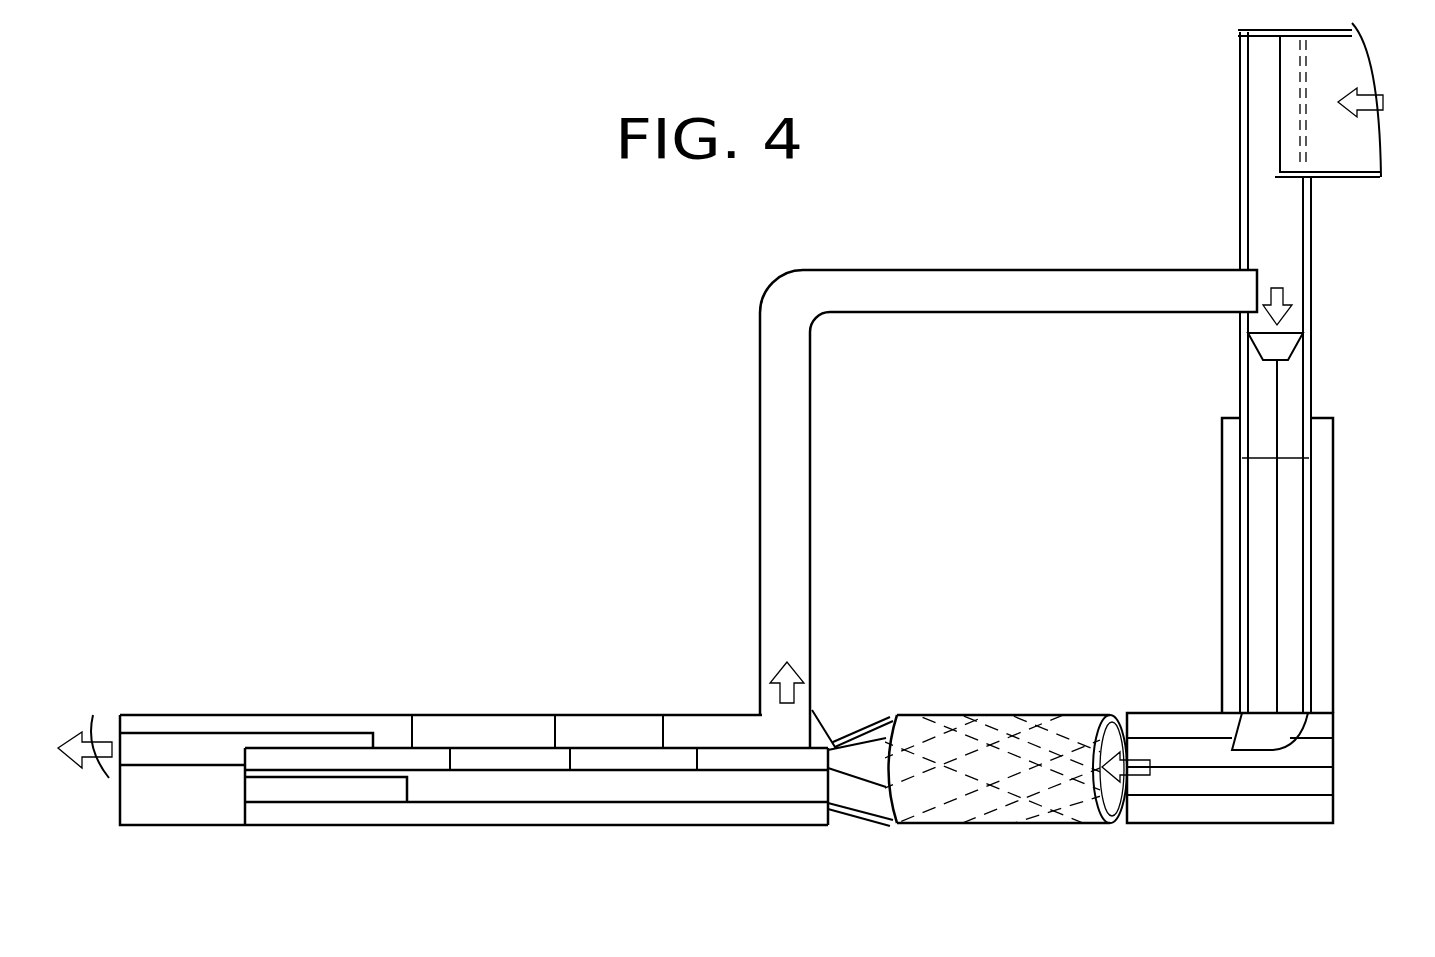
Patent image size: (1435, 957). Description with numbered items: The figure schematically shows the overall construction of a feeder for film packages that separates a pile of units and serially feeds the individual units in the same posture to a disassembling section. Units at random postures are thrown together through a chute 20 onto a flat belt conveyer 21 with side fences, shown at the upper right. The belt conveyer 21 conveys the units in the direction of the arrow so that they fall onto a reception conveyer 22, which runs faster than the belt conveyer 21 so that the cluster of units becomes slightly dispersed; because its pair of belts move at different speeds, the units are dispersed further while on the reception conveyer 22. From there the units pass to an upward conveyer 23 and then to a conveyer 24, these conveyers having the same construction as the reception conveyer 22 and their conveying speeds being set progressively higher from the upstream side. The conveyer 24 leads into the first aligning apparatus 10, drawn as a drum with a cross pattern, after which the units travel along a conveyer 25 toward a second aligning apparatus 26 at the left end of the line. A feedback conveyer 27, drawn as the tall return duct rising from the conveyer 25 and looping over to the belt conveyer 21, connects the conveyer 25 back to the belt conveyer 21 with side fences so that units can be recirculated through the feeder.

The first aligning apparatus 10 is at (997, 826).
The chute 20 is at (1340, 138).
The belt conveyer with side fences 21 is at (1283, 228).
The reception conveyer 22 is at (1278, 400).
The upward conveyer 23 is at (1285, 597).
The conveyer 24 is at (1270, 773).
The conveyer 25 is at (632, 780).
The second aligning apparatus 26 is at (323, 785).
The feedback conveyer 27 is at (760, 480).